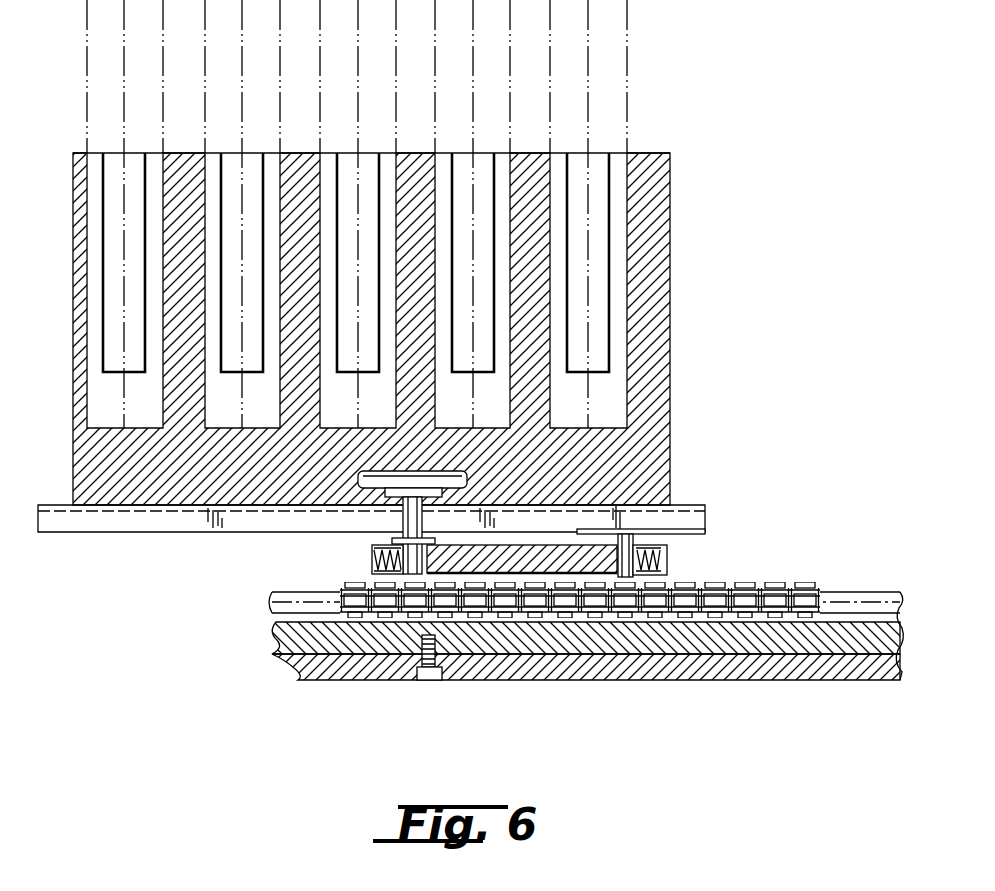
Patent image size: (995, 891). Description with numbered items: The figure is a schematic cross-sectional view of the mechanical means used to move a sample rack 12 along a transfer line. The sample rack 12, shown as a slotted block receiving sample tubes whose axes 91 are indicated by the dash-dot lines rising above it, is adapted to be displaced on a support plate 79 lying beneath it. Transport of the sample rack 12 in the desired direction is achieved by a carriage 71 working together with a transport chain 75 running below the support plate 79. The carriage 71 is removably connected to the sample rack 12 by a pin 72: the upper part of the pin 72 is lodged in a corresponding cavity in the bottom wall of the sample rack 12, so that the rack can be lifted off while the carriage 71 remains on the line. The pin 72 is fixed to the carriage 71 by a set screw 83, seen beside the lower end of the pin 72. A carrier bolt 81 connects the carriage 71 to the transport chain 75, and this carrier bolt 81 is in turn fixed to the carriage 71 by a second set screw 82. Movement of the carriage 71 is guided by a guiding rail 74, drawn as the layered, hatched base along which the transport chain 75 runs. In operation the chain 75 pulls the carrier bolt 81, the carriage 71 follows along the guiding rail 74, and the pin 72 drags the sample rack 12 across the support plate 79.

The sample rack 12 is at (658, 324).
The tubes 91 is at (608, 48).
The support plate 79 is at (695, 512).
The pin 72 is at (383, 510).
The set screw 83 is at (373, 557).
The carriage 71 is at (578, 567).
The carrier bolt 81 is at (627, 541).
The set screw 82 is at (667, 558).
The transport chain 75 is at (778, 597).
The guiding rail 74 is at (863, 630).